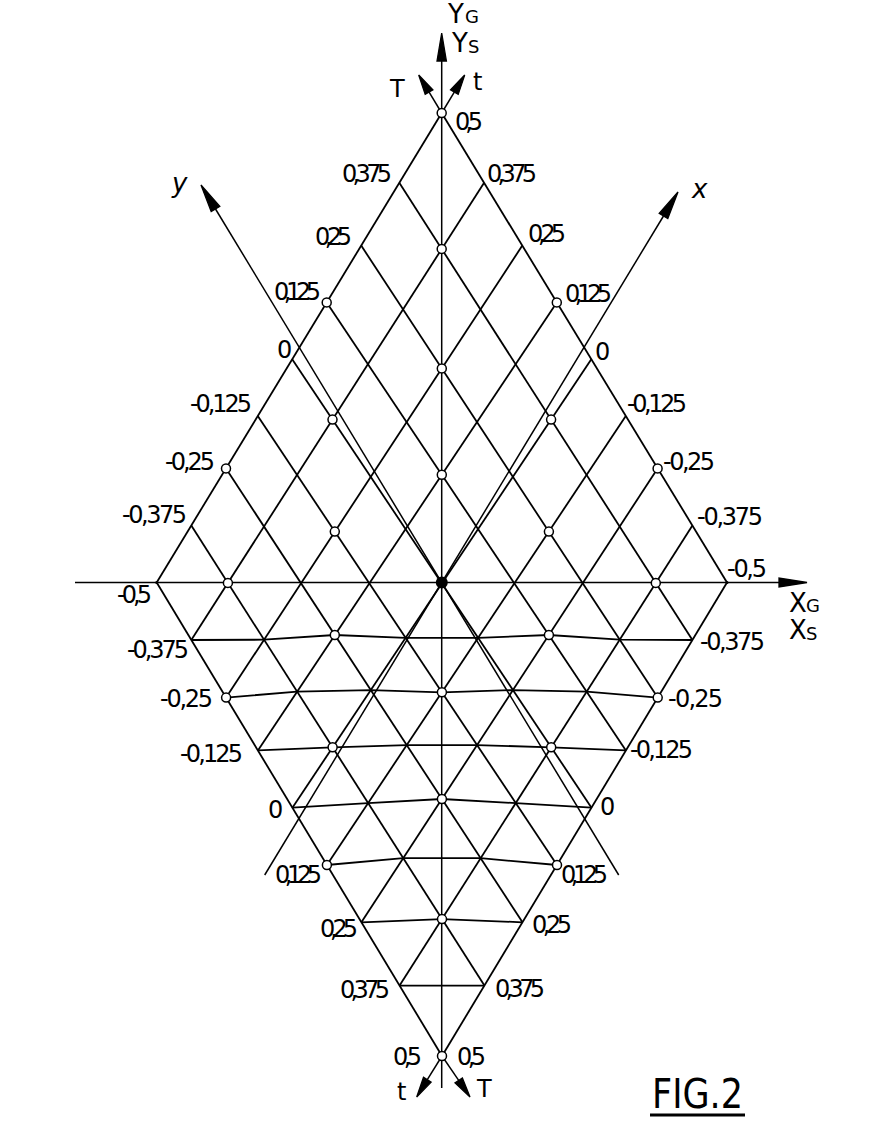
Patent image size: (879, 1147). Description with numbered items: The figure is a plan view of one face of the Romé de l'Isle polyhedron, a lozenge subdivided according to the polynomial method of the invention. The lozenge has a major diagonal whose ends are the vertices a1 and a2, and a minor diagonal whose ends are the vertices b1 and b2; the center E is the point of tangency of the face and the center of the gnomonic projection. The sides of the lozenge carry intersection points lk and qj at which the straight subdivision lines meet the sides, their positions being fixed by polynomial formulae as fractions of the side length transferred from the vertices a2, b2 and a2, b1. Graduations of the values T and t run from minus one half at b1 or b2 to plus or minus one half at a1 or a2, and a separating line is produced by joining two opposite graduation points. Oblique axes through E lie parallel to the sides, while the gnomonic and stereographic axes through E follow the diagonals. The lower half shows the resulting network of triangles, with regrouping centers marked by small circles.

The vertex at end of major diagonal a1 is at (447, 112).
The vertex at end of major diagonal a2 is at (444, 1052).
The vertex at end of minor diagonal b1 is at (153, 581).
The vertex at end of minor diagonal b2 is at (729, 586).
The center of gnomonic projection E is at (447, 579).
The intersection points of subdivision lines qj is at (366, 243).
The intersection points of subdivision lines lk is at (522, 247).